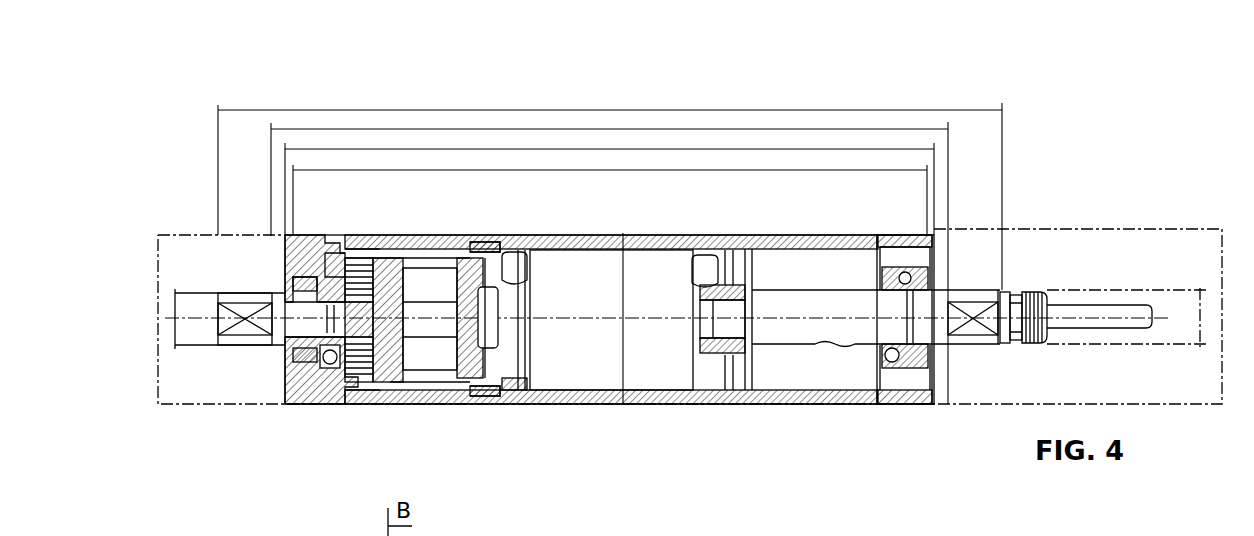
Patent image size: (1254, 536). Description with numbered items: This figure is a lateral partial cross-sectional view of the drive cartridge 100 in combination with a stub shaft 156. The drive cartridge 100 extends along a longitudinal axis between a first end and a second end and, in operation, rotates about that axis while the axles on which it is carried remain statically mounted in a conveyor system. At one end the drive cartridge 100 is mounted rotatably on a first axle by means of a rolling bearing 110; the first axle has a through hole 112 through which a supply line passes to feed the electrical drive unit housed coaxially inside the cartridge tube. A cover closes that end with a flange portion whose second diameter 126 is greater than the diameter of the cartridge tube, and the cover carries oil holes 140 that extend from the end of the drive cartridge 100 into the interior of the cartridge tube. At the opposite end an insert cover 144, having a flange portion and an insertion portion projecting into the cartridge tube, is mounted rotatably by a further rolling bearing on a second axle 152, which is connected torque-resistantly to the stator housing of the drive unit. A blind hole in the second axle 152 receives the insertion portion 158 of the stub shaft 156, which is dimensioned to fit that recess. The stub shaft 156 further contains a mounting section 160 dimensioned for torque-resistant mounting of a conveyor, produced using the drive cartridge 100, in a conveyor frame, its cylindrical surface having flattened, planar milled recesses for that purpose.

The drive cartridge 100 is at (795, 417).
The rolling bearing 110 is at (880, 353).
The through hole 112 is at (1060, 318).
The second diameter 126 is at (1222, 370).
The oil holes 140 is at (937, 380).
The insert cover 144 is at (302, 244).
The second axle 152 is at (292, 308).
The stub shaft 156 is at (238, 347).
The insertion portion 158 is at (297, 325).
The mounting section 160 is at (230, 300).